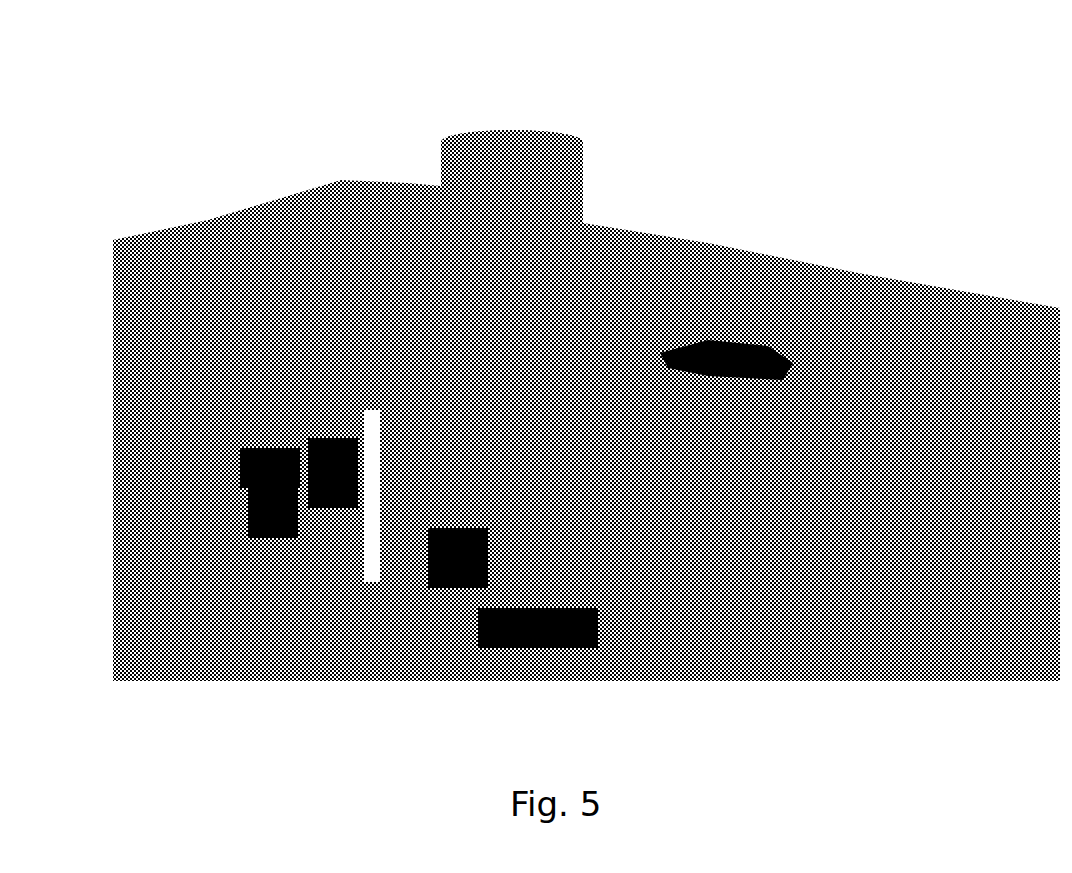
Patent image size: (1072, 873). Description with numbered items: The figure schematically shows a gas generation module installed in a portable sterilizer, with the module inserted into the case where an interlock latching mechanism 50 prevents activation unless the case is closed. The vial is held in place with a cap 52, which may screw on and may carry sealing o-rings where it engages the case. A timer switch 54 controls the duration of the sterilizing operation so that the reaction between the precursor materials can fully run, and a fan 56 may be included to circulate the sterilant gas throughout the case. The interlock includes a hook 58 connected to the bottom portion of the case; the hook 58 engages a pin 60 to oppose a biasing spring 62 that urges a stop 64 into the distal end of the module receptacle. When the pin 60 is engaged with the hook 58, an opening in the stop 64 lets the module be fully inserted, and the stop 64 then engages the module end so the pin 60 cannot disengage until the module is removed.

The interlock latching mechanism 50 is at (352, 489).
The cap 52 is at (616, 174).
The timer switch 54 is at (757, 332).
The fan 56 is at (578, 627).
The hook 58 is at (233, 460).
The pin 60 is at (248, 497).
The biasing spring 62 is at (300, 482).
The stop 64 is at (437, 540).